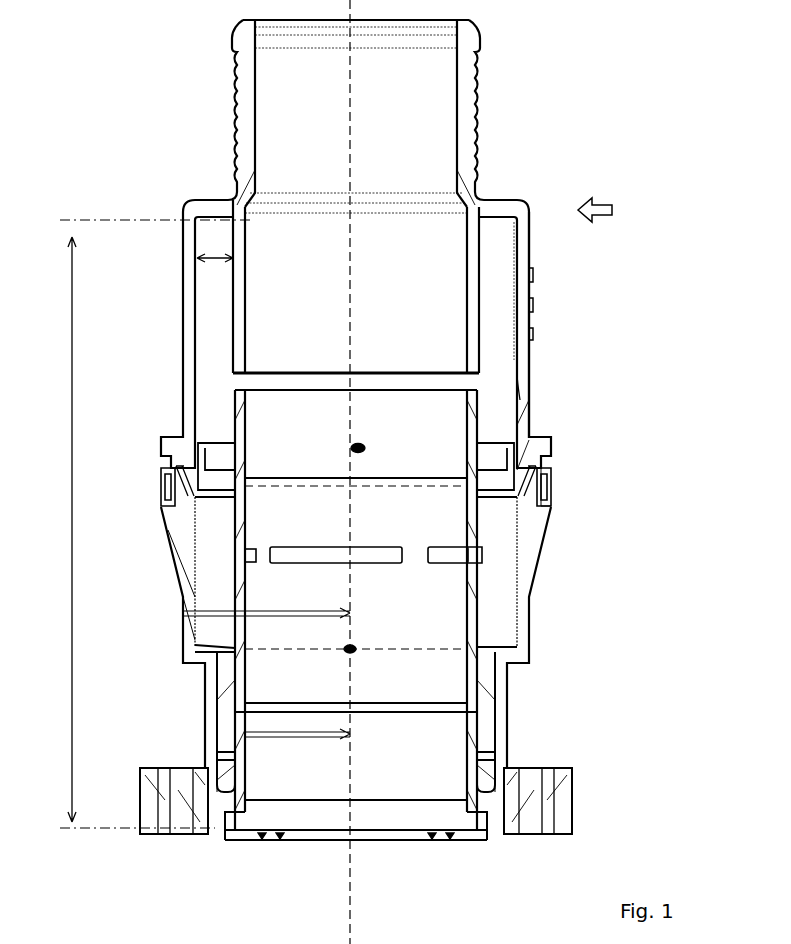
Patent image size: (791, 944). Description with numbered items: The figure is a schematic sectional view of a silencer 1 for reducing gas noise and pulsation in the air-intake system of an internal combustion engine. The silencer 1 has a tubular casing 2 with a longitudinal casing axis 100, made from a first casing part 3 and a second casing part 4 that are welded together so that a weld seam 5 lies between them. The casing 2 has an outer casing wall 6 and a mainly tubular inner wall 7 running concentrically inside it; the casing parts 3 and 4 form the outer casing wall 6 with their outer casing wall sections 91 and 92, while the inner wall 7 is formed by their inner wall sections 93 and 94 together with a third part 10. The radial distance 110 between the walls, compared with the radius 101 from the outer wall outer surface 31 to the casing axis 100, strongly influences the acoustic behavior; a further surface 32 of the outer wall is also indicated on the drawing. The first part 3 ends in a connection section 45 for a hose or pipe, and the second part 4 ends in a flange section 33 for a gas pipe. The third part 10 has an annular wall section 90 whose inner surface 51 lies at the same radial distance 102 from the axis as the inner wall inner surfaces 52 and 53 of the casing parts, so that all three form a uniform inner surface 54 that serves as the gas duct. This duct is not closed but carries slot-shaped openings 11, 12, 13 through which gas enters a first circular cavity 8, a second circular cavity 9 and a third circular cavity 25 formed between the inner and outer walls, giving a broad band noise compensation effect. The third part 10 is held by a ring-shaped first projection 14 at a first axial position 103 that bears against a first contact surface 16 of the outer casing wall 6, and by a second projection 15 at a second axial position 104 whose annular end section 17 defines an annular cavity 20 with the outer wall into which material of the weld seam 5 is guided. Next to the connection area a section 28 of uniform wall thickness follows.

The silencer 1 is at (607, 210).
The tubular casing 2 is at (525, 382).
The first casing part 3 is at (522, 262).
The second casing part 4 is at (525, 602).
The weld seam 5 is at (545, 481).
The outer casing wall 6 is at (523, 410).
The inner wall 7 is at (505, 376).
The first circular cavity 8 is at (508, 288).
The second circular cavity 9 is at (485, 575).
The third part 10 is at (475, 685).
The openings 11 is at (285, 555).
The openings 12 is at (253, 383).
The openings 13 is at (245, 708).
The first projection 14 is at (205, 652).
The second projection 15 is at (215, 481).
The first contact surface 16 is at (193, 655).
The end section 17 is at (551, 468).
The annular cavity 20 is at (178, 465).
The third circular cavity 25 is at (228, 692).
The second section of uniform wall thickness 28 is at (525, 650).
The outer wall outer surface 31 is at (195, 588).
The inner surface 32 is at (200, 620).
The flange section 33 is at (560, 805).
The connection section 45 is at (468, 132).
The inner surface 51 is at (235, 517).
The inner wall inner surface 52 is at (232, 320).
The inner wall inner surface 53 is at (470, 765).
The uniform inner surface 54 is at (143, 524).
The annular wall section 90 is at (470, 525).
The outer casing wall section 91 is at (527, 240).
The outer casing wall section 92 is at (497, 740).
The inner wall section 93 is at (500, 210).
The inner wall section 94 is at (470, 725).
The casing axis 100 is at (356, 864).
The radius 101 is at (266, 605).
The radial distance 102 is at (297, 745).
The first axial position 103 is at (356, 559).
The second axial position 104 is at (388, 506).
The radial distance 110 is at (215, 249).